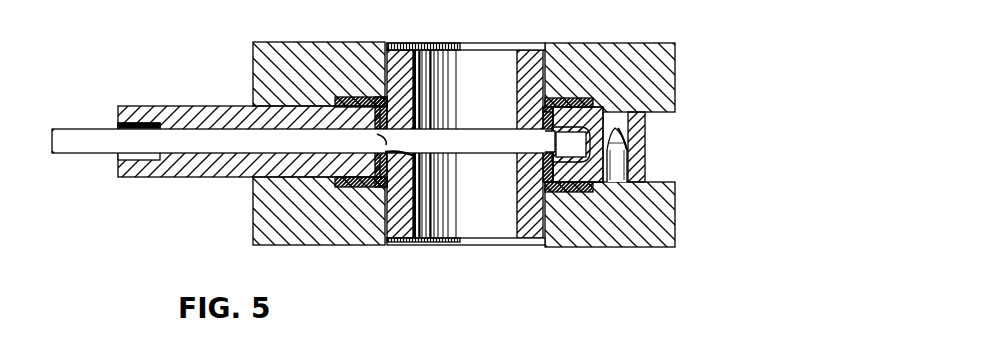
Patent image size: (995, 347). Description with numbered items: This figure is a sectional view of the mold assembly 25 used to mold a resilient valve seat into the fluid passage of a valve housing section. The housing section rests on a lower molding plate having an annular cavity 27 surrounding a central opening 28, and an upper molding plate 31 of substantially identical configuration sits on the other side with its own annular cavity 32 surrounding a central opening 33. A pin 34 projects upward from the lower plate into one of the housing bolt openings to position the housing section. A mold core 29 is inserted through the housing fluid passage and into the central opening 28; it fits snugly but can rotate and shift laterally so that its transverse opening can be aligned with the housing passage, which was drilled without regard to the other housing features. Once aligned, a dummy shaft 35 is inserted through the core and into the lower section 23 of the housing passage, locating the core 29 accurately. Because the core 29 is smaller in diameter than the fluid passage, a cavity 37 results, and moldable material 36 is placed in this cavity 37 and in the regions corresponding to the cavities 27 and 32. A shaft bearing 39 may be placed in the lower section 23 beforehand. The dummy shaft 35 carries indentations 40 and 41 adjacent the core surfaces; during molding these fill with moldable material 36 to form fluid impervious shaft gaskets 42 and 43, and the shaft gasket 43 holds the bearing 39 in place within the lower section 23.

The lower section of the passage 23 is at (578, 163).
The mold assembly 25 is at (190, 206).
The annular cavity 27 is at (347, 190).
The central opening 28 is at (428, 240).
The mold core 29 is at (522, 228).
The upper molding plate 31 is at (276, 48).
The annular cavity 32 is at (356, 97).
The central opening 33 is at (400, 45).
The pin 34 is at (617, 152).
The dummy shaft 35 is at (70, 132).
The moldable material 36 is at (533, 95).
The cavity 37 is at (408, 97).
The shaft bearing 39 is at (538, 128).
The indentation 40 is at (380, 140).
The indentation 41 is at (545, 145).
The shaft gasket 42 is at (415, 156).
The shaft gasket 43 is at (546, 165).